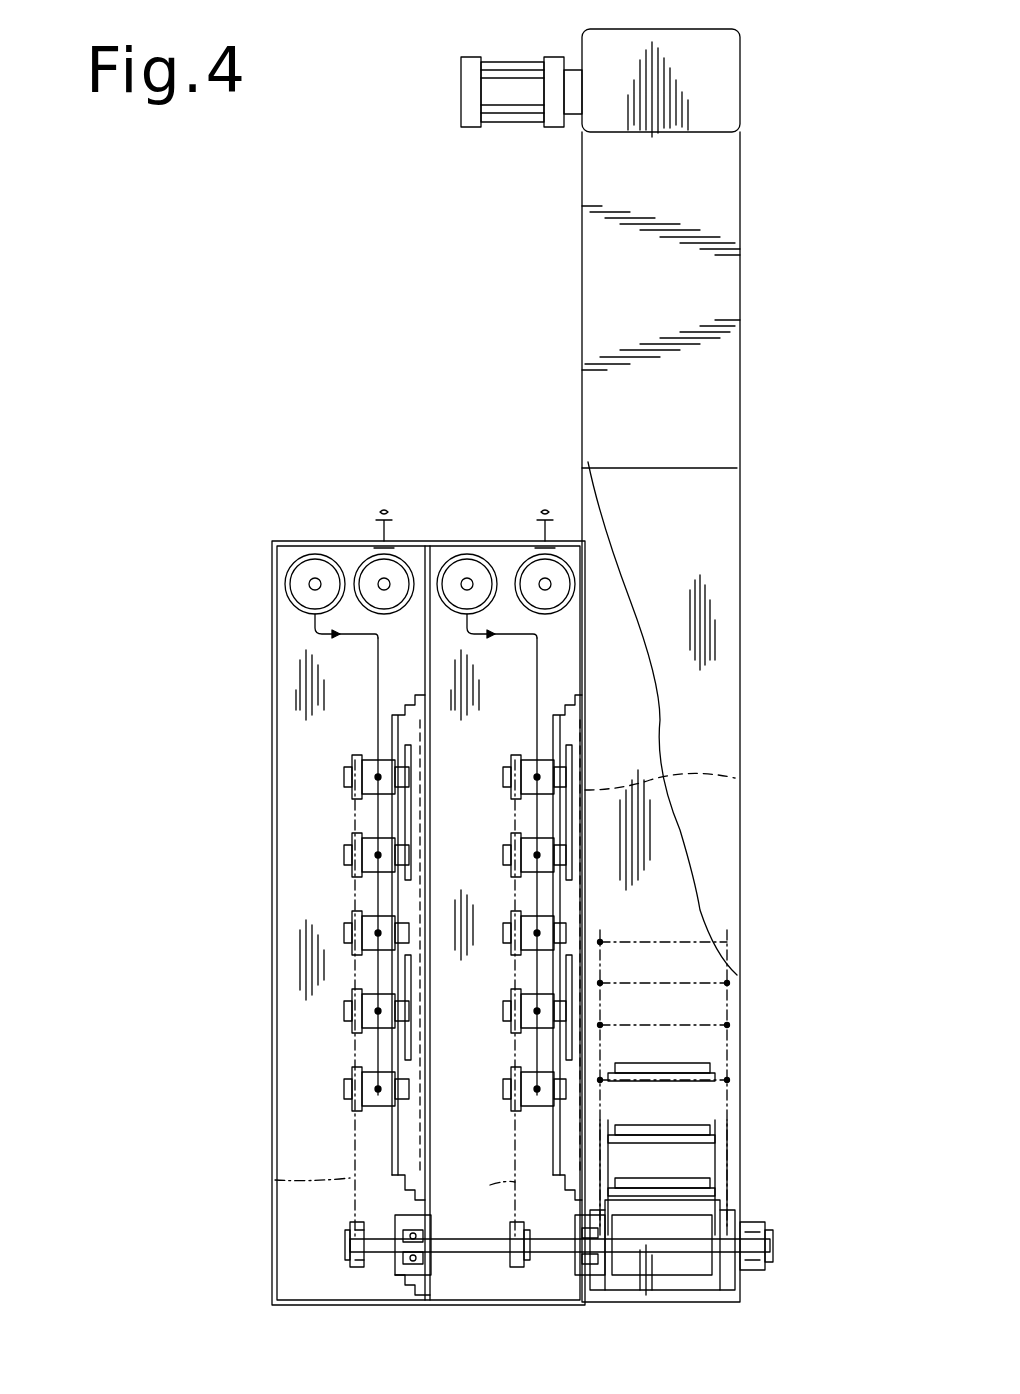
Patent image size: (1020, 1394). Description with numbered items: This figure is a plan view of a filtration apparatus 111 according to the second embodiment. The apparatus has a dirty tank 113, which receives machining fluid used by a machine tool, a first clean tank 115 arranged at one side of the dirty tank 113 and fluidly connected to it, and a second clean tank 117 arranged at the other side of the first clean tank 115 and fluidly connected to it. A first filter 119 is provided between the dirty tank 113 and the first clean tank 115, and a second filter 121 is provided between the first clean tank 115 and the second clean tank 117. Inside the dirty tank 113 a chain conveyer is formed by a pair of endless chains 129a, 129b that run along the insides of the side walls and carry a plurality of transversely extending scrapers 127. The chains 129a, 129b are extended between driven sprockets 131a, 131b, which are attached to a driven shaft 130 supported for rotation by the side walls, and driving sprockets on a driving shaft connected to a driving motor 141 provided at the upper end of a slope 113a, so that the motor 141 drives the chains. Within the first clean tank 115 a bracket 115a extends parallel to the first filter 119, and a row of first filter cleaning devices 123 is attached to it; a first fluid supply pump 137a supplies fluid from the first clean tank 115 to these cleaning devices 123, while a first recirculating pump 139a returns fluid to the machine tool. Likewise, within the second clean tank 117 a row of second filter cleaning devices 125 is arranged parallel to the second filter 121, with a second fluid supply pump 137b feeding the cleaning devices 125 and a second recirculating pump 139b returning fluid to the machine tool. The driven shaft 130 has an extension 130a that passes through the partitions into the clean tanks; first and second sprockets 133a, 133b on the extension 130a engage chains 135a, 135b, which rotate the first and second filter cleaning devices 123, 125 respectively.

The filtration apparatus 111 is at (368, 156).
The dirty tank 113 is at (740, 600).
The slope 113a is at (740, 250).
The first clean tank 115 is at (522, 540).
The bracket 115a is at (556, 700).
The second clean tank 117 is at (290, 548).
The first filter 119 is at (736, 780).
The second filter 121 is at (430, 1005).
The first filter cleaning devices 123 is at (510, 845).
The second filter cleaning devices 125 is at (352, 845).
The scrapers 127 is at (695, 1185).
The endless chain 129a is at (740, 985).
The endless chain 129b is at (605, 945).
The driven shaft 130 is at (700, 1275).
The extension 130a is at (420, 1278).
The driven sprocket 131a is at (772, 1252).
The driven sprocket 131b is at (600, 1280).
The first sprocket 133a is at (518, 1270).
The second sprocket 133b is at (356, 1270).
The chain 135a is at (490, 1186).
The chain 135b is at (275, 1180).
The first fluid supply pump 137a is at (462, 560).
The second fluid supply pump 137b is at (312, 560).
The first recirculating pump 139a is at (560, 560).
The second recirculating pump 139b is at (402, 560).
The driving motor 141 is at (510, 128).